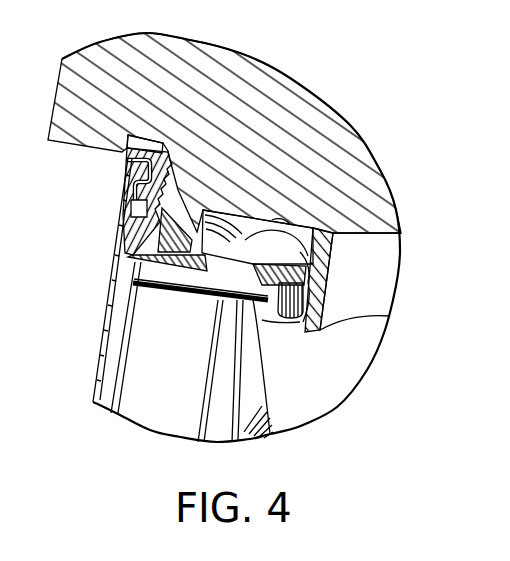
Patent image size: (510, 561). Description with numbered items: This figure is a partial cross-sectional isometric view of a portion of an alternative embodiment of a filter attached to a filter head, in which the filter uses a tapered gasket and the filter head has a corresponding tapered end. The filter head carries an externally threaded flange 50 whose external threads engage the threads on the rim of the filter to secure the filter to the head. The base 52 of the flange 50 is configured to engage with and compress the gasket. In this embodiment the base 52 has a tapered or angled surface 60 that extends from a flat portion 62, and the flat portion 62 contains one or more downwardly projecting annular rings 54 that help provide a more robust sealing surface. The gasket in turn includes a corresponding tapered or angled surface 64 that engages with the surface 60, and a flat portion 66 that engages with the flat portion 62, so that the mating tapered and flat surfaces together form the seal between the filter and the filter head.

The externally threaded flange 50 is at (183, 192).
The base 52 is at (137, 204).
The circumferential rings 54 is at (171, 264).
The tapered surface 60 is at (125, 225).
The flat portion 62 is at (182, 268).
The tapered surface of gasket 64 is at (122, 261).
The flat portion of gasket 66 is at (208, 208).